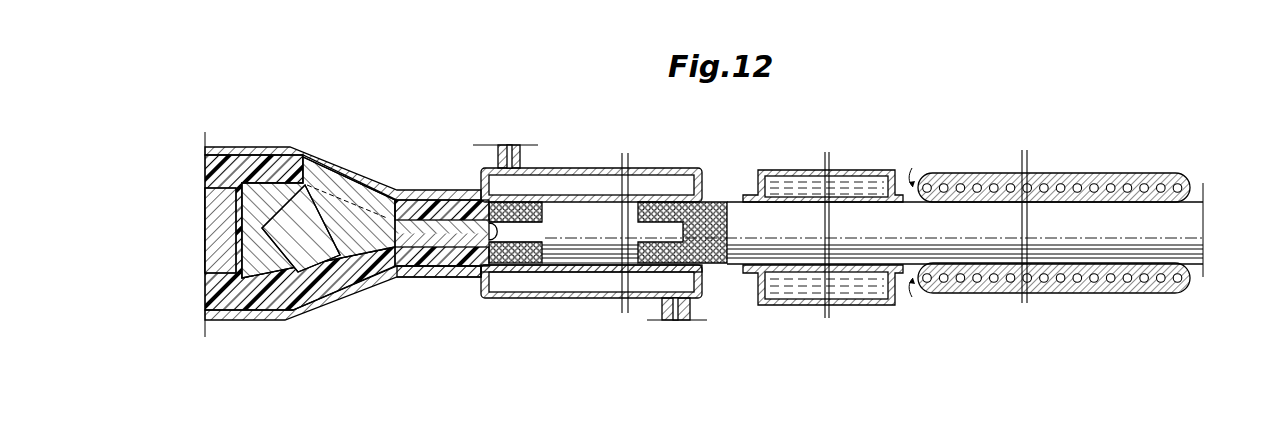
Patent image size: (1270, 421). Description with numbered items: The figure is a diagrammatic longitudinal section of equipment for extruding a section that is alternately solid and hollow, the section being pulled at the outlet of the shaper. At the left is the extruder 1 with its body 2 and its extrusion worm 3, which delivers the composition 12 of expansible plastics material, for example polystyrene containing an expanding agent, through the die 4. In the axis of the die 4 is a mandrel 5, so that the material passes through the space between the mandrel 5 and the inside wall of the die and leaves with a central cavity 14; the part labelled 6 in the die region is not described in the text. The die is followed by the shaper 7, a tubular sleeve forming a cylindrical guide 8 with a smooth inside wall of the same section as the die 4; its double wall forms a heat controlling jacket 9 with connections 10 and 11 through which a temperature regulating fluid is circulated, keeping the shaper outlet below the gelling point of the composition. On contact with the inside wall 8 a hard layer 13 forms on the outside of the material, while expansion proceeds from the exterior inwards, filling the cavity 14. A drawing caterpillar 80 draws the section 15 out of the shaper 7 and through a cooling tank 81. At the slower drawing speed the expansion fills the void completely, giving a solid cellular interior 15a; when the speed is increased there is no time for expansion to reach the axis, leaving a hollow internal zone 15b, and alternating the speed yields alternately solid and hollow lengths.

The extruder 1 is at (265, 146).
The body 2 is at (218, 147).
The extrusion worm 3 is at (212, 268).
The die 4 is at (427, 198).
The mandrel 5 is at (408, 266).
The insulating body 6 is at (337, 188).
The shaper 7 is at (573, 168).
The cylindrical guide 8 is at (707, 208).
The heat controlling jacket 9 is at (642, 182).
The connection 10 is at (672, 322).
The connection 11 is at (508, 145).
The composition of expansible plastics material 12 is at (282, 298).
The hard layer 13 is at (513, 272).
The central cavity 14 is at (463, 277).
The section 15 is at (588, 252).
The solid cellular interior 15a is at (712, 266).
The hollow internal zone 15b is at (538, 262).
The drawing caterpillar 80 is at (1057, 181).
The cooling tank 81 is at (860, 290).